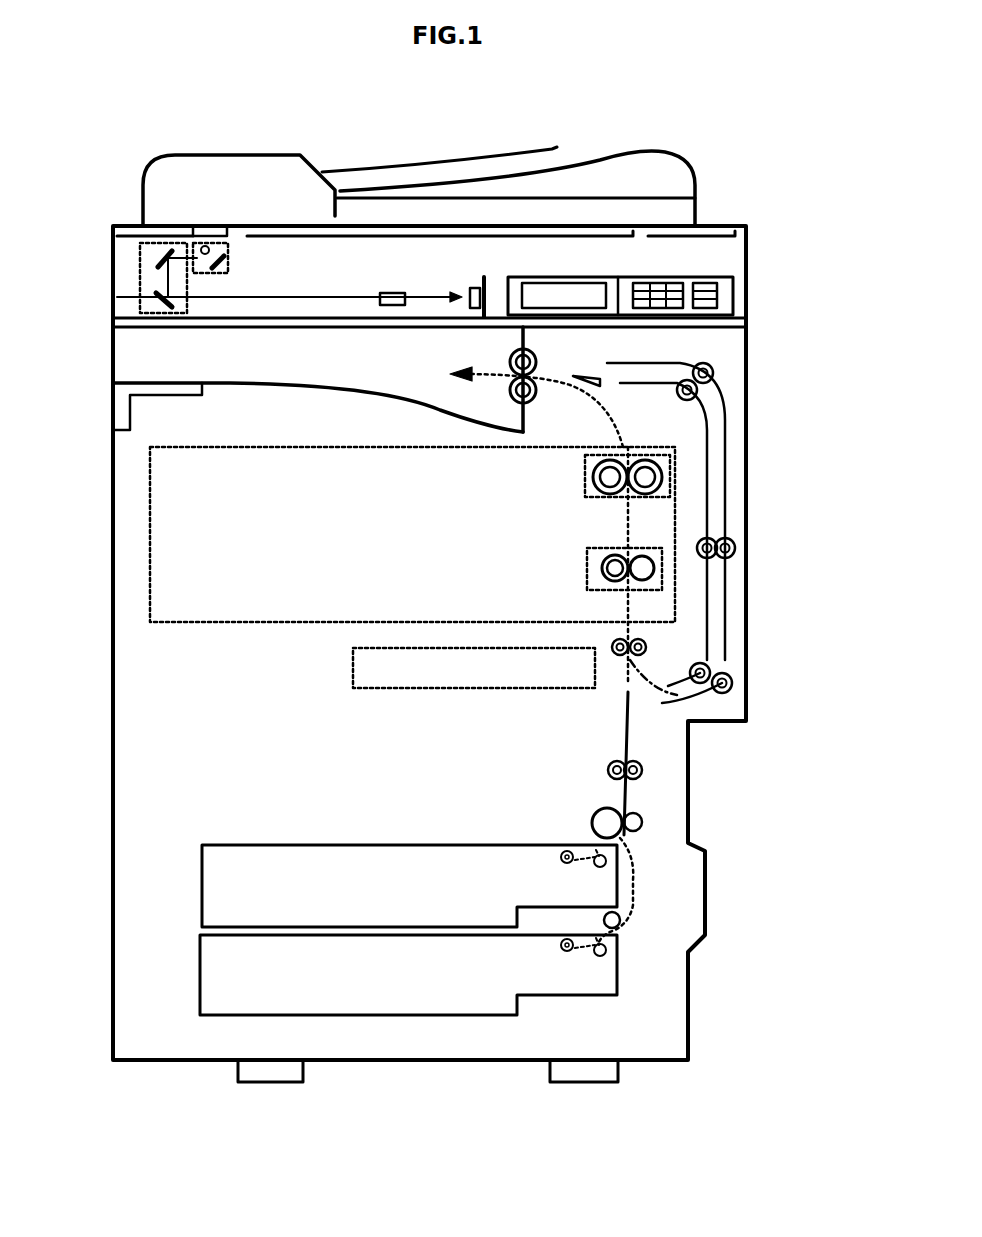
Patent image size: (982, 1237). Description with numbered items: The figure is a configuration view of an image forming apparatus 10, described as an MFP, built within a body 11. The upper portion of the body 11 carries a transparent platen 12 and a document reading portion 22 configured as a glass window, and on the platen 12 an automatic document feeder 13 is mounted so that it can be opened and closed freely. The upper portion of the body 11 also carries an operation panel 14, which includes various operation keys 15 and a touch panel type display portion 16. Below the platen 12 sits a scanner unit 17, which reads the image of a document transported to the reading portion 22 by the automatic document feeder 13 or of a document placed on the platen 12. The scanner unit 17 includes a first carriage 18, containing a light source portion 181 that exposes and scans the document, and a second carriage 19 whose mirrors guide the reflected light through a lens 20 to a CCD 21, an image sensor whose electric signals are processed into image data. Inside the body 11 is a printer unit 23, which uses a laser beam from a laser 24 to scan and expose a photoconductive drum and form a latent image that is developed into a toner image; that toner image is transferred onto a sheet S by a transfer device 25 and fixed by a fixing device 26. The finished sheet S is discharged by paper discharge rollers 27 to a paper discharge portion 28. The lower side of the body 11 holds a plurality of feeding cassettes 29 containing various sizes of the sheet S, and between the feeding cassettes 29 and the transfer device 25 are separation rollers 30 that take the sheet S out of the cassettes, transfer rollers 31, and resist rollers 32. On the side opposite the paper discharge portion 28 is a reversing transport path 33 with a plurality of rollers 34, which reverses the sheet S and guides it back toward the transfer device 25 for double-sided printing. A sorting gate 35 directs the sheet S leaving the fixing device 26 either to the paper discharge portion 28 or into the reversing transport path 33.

The image forming apparatus 10 is at (625, 135).
The body 11 is at (110, 718).
The transparent platen 12 is at (448, 232).
The automatic document feeder 13 is at (236, 148).
The operation panel 14 is at (746, 304).
The operation keys 15 is at (652, 282).
The display portion 16 is at (562, 283).
The scanner unit 17 is at (355, 248).
The first carriage 18 is at (226, 267).
The light source portion 181 is at (215, 250).
The second carriage 19 is at (140, 290).
The lens 20 is at (390, 292).
The CCD 21 is at (468, 290).
The document reading portion 22 is at (205, 240).
The printer unit 23 is at (150, 558).
The laser 24 is at (455, 690).
The transfer device 25 is at (604, 547).
The fixing device 26 is at (638, 455).
The paper discharge rollers 27 is at (535, 398).
The paper discharge portion 28 is at (318, 360).
The feeding cassettes 29 is at (220, 845).
The separation rollers 30 is at (592, 822).
The transfer rollers 31 is at (638, 762).
The resist rollers 32 is at (648, 645).
The reversing transport path 33 is at (730, 490).
The rollers 34 is at (715, 375).
The sorting gate 35 is at (586, 375).
The sheet S is at (630, 793).